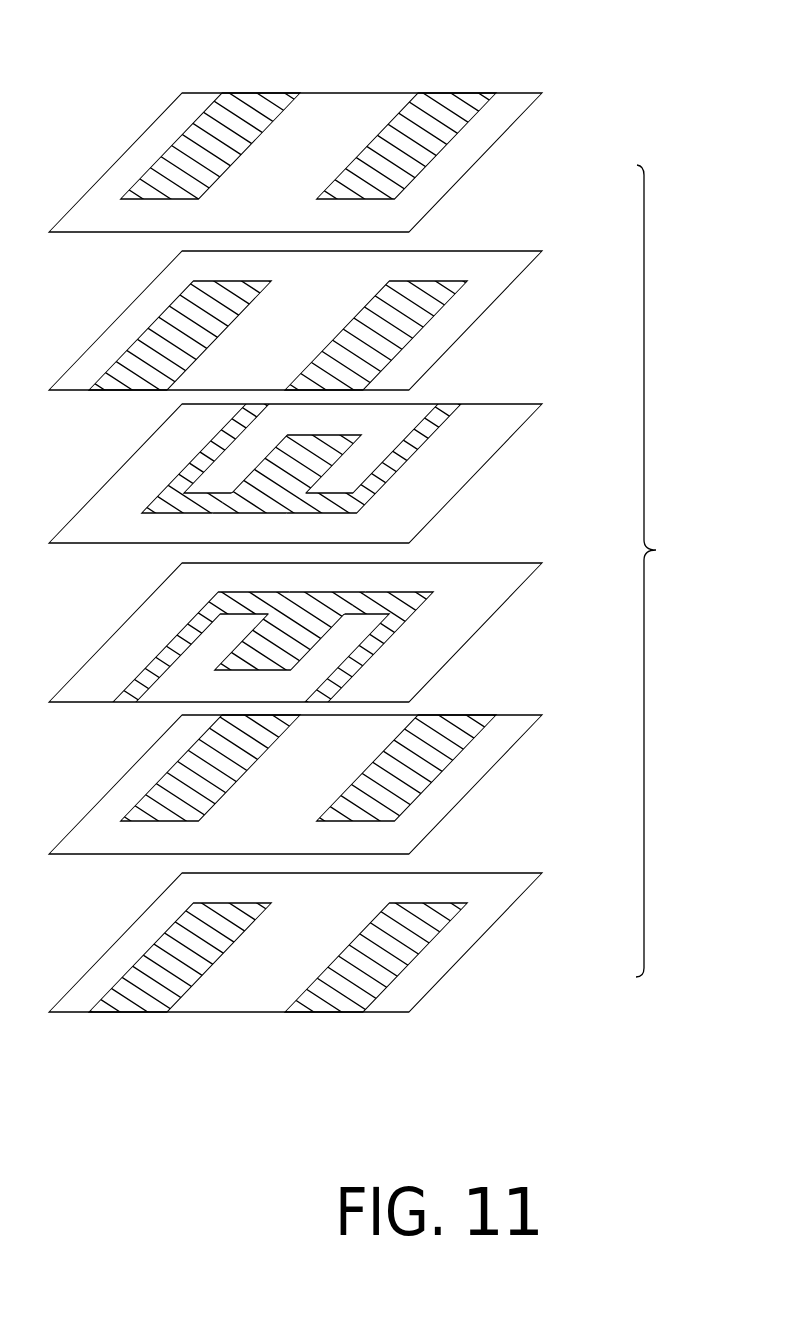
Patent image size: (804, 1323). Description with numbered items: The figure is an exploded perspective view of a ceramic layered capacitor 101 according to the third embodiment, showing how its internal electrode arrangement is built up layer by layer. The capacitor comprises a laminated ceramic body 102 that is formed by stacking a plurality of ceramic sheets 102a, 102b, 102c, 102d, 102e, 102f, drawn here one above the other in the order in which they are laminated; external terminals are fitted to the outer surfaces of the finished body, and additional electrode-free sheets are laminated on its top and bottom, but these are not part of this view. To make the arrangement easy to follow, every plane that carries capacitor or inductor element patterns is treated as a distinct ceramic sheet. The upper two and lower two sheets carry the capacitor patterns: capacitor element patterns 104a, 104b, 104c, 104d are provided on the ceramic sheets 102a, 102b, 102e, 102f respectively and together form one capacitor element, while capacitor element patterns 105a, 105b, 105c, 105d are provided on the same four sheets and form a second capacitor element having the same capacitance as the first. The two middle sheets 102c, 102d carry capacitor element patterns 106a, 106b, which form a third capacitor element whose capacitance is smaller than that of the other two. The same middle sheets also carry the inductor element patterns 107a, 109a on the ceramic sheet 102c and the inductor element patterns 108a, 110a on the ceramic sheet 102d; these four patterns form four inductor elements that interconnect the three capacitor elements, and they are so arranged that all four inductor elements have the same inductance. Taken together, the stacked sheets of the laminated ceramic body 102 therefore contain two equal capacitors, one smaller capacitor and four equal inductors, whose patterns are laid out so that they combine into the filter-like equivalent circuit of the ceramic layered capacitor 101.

The ceramic layered capacitor 101 is at (662, 45).
The laminated ceramic body 102 is at (656, 550).
The ceramic sheet 102a is at (520, 139).
The ceramic sheet 102b is at (516, 300).
The ceramic sheet 102c is at (507, 452).
The ceramic sheet 102d is at (495, 628).
The ceramic sheet 102e is at (512, 765).
The ceramic sheet 102f is at (513, 918).
The capacitor element pattern 104a is at (173, 158).
The capacitor element pattern 104b is at (160, 330).
The capacitor element pattern 104c is at (170, 797).
The capacitor element pattern 104d is at (145, 982).
The capacitor element pattern 105a is at (400, 175).
The capacitor element pattern 105b is at (400, 333).
The capacitor element pattern 105c is at (412, 780).
The capacitor element pattern 105d is at (375, 975).
The capacitor element pattern 106a is at (277, 473).
The capacitor element pattern 106b is at (307, 632).
The inductor element pattern 107a is at (192, 472).
The inductor element pattern 108a is at (178, 647).
The inductor element pattern 109a is at (393, 463).
The inductor element pattern 110a is at (370, 652).